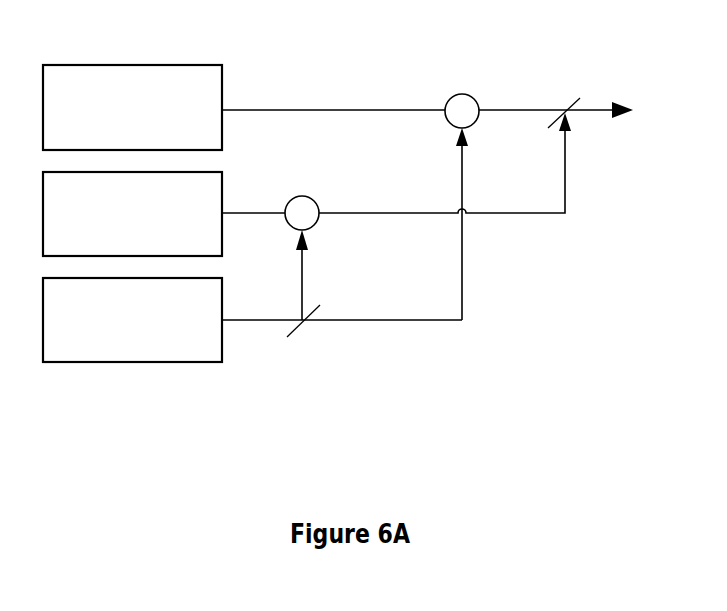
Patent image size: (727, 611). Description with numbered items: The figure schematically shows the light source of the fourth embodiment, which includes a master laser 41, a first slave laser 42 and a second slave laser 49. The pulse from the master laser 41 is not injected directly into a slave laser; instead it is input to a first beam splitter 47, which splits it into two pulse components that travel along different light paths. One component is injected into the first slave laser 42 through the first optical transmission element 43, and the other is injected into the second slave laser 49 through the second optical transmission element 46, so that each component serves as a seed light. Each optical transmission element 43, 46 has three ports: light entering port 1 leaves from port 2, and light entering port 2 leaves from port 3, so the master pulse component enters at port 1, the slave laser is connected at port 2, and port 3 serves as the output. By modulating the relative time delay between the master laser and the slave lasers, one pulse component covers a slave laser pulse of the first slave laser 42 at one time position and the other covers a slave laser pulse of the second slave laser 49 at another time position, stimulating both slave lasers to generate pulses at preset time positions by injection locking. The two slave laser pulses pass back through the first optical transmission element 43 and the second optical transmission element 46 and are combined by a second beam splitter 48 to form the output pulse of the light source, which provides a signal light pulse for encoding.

The second slave laser 49 is at (244, 107).
The first slave laser 42 is at (164, 214).
The master laser 41 is at (252, 320).
The second optical transmission element 46 is at (539, 207).
The first optical transmission element 43 is at (428, 216).
The first beam splitter 47 is at (309, 330).
The second beam splitter 48 is at (559, 106).
The port 1 is at (366, 192).
The port 2 is at (354, 147).
The port 3 is at (412, 147).